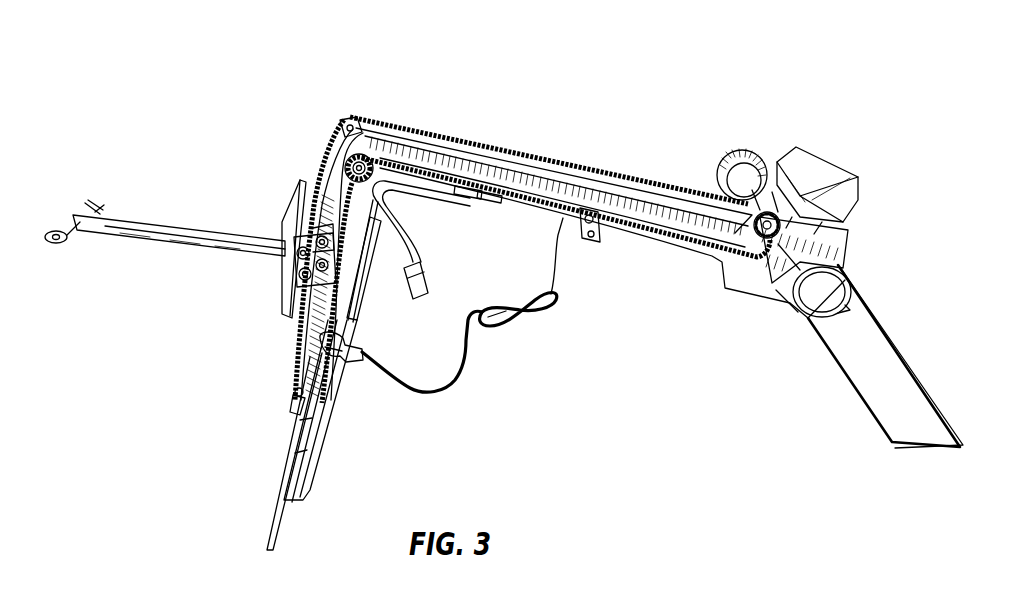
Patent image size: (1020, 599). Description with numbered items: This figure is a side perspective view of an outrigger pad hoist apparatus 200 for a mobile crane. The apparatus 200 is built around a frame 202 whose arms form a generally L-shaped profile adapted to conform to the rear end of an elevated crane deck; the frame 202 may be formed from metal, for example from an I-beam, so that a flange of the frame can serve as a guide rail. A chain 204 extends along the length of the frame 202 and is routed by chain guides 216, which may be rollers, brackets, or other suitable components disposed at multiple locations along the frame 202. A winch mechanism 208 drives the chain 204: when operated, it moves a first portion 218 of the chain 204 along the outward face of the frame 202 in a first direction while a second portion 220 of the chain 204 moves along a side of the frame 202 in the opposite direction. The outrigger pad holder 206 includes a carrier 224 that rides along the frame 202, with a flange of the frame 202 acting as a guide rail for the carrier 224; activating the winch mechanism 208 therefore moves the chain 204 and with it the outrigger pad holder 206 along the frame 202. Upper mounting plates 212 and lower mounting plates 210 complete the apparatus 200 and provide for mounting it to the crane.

The outrigger pad hoist apparatus 200 is at (785, 71).
The frame 202 is at (663, 230).
The chain 204 is at (690, 193).
The outrigger pad holder 206 is at (300, 207).
The winch mechanism 208 is at (837, 170).
The lower mounting plates 210 is at (290, 433).
The upper mounting plates 212 is at (866, 393).
The chain guides 216 is at (346, 114).
The first portion of the chain 218 is at (457, 133).
The second portion of the chain 220 is at (510, 208).
The carrier 224 is at (292, 266).